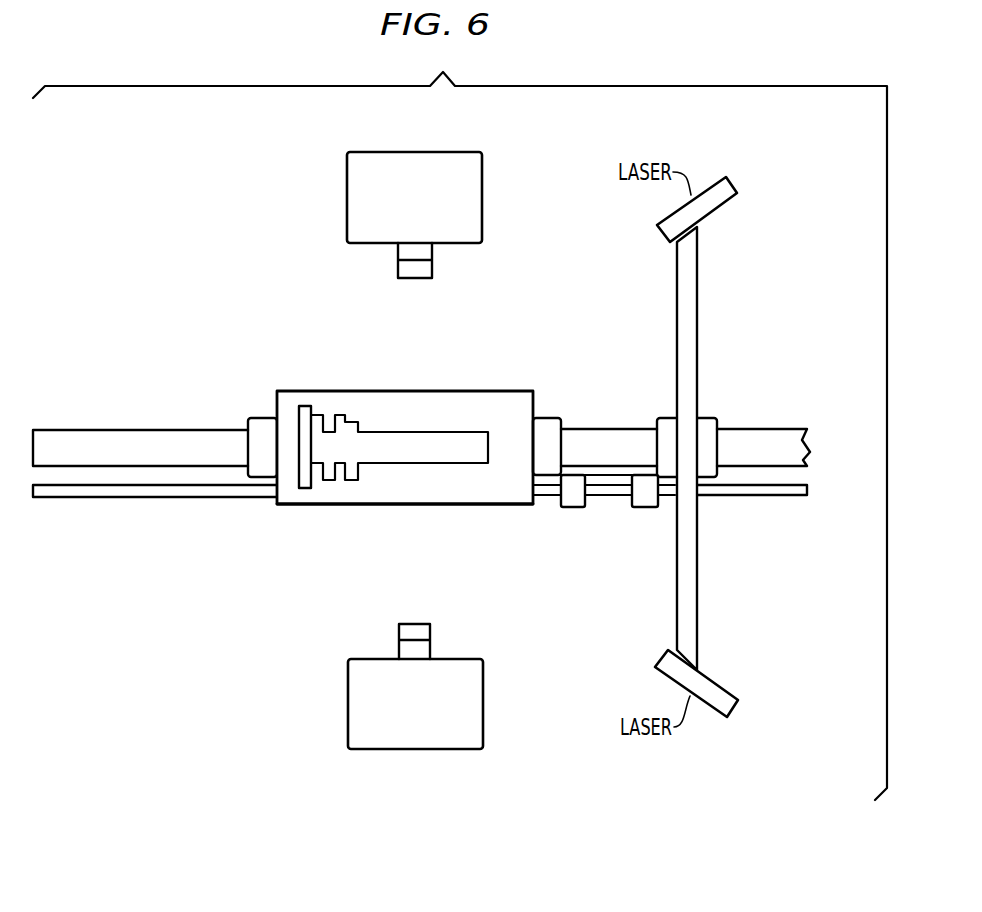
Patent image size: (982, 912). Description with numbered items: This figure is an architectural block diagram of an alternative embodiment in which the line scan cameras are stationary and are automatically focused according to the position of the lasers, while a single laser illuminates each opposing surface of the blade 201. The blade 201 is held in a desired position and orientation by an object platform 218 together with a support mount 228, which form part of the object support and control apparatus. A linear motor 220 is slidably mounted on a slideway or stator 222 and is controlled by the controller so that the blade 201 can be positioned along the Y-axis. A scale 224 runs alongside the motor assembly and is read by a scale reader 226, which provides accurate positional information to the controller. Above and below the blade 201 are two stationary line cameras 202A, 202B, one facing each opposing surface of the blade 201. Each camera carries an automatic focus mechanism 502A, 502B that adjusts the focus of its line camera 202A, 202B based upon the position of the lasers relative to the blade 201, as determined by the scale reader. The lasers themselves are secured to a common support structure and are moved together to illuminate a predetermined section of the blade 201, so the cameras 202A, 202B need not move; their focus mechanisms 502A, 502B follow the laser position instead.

The line camera 202A is at (347, 193).
The automatic focus mechanism 502A is at (486, 276).
The line camera 202B is at (377, 749).
The automatic focus mechanism 502B is at (487, 632).
The blade 201 is at (458, 391).
The object platform 218 is at (465, 504).
The linear motor 220 is at (155, 424).
The stator 222 is at (687, 400).
The scale 224 is at (758, 497).
The scale reader 226 is at (578, 508).
The support mount 228 is at (309, 488).